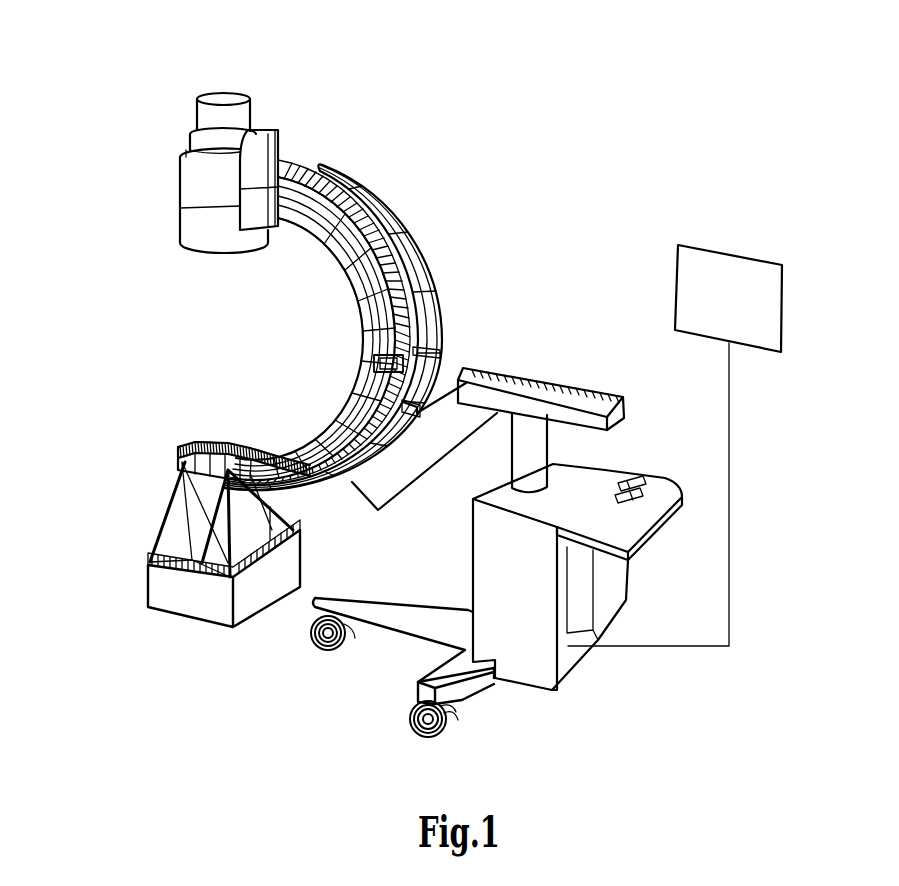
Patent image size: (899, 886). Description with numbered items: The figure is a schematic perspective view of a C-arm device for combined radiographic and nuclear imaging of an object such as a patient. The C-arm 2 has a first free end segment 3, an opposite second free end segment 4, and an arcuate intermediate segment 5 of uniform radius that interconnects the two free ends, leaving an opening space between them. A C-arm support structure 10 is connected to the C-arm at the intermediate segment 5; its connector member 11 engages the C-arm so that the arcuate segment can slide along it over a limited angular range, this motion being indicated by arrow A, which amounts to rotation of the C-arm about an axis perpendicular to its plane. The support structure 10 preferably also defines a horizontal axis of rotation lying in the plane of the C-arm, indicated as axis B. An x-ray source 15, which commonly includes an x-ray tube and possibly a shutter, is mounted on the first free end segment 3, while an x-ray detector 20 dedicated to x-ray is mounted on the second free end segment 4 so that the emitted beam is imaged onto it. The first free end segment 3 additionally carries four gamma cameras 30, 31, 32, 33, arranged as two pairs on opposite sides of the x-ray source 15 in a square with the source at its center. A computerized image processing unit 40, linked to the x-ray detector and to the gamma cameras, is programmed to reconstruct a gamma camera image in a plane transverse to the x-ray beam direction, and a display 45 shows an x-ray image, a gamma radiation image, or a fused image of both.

The C-arm support structure 10 is at (369, 716).
The C-arm 2 is at (352, 233).
The first free end segment 3 is at (197, 483).
The second free end segment 4 is at (295, 234).
The intermediate segment 5 is at (346, 328).
The connector member 11 is at (387, 477).
The x-ray source 15 is at (185, 493).
The x-ray detector 20 is at (291, 102).
The gamma camera 30 is at (178, 517).
The gamma camera 31 is at (236, 453).
The gamma camera 32 is at (213, 546).
The gamma camera 33 is at (266, 447).
The computerized image processing unit 40 is at (530, 655).
The display 45 is at (770, 302).
The arrow indicating sliding motion A is at (422, 216).
The axis of rotation B is at (445, 377).